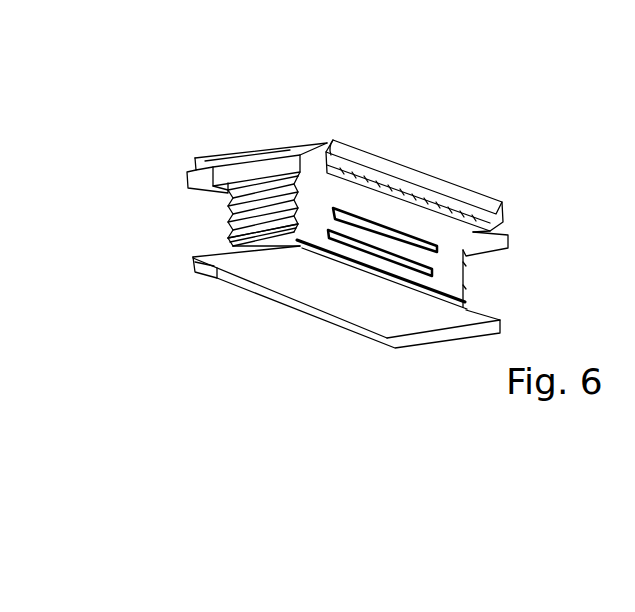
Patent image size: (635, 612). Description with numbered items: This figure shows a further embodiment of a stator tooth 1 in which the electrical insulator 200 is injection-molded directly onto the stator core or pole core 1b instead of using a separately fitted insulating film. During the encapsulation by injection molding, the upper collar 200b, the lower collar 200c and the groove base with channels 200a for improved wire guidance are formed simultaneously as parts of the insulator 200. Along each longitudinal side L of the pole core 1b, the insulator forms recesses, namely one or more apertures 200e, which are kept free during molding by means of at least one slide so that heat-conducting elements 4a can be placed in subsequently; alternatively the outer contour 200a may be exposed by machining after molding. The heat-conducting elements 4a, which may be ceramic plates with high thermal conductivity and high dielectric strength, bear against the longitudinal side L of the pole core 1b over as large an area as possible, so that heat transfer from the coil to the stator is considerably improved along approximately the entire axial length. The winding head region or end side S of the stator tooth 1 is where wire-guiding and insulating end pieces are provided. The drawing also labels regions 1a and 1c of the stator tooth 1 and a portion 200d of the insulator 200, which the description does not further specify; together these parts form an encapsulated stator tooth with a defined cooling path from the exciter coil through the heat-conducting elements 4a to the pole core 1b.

The stator tooth 1 is at (230, 110).
The bottom plate of housing 1a is at (303, 290).
The pole core 1b is at (467, 263).
The top wall of housing 1c is at (293, 142).
The heat-conducting element 4a is at (370, 222).
The longitudinal side L is at (457, 192).
The end side S is at (225, 157).
The electrical insulator 200 is at (260, 203).
The channels 200a is at (225, 235).
The upper collar 200b is at (215, 265).
The lower collar 200c is at (180, 178).
The bellows notch 200d is at (333, 143).
The apertures 200e is at (465, 265).